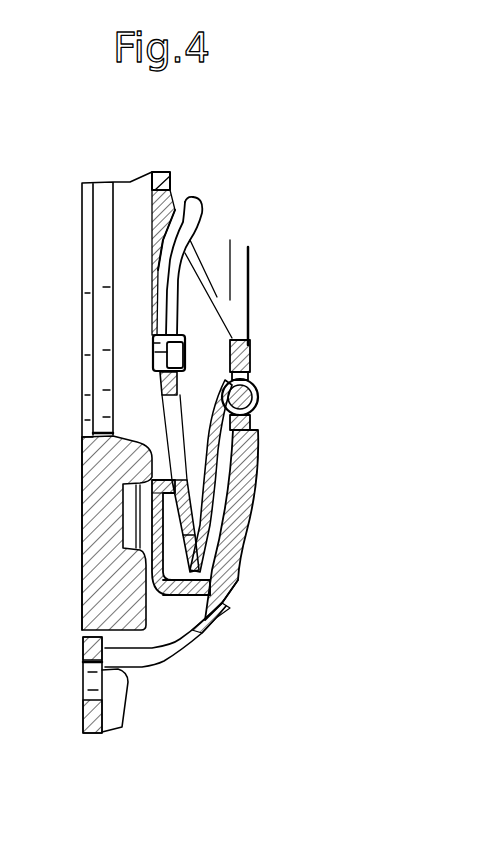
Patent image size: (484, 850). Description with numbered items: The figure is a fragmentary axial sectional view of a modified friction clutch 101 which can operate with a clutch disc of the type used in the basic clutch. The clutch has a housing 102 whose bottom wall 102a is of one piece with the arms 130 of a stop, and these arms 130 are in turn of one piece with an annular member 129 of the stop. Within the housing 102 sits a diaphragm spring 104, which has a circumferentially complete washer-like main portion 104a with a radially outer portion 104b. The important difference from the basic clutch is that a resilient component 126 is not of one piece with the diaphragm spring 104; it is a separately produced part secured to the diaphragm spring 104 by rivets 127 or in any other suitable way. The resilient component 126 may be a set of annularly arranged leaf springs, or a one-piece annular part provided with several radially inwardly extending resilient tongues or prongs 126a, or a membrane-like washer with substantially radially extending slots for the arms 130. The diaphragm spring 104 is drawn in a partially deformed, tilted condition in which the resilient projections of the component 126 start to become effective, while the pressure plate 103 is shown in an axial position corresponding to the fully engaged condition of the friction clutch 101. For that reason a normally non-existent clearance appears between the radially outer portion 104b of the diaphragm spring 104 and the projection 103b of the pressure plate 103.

The friction clutch 101 is at (240, 197).
The housing 102 is at (210, 631).
The bottom wall 102a is at (238, 454).
The pressure plate 103 is at (85, 617).
The projection 103b is at (205, 593).
The diaphragm spring 104 is at (181, 532).
The main portion 104a is at (198, 548).
The radially outer portion 104b is at (166, 563).
The resilient component 126 is at (180, 290).
The tongues or prongs 126a is at (181, 223).
The rivets 127 is at (185, 351).
The annular member 129 is at (159, 178).
The arms 130 is at (216, 298).